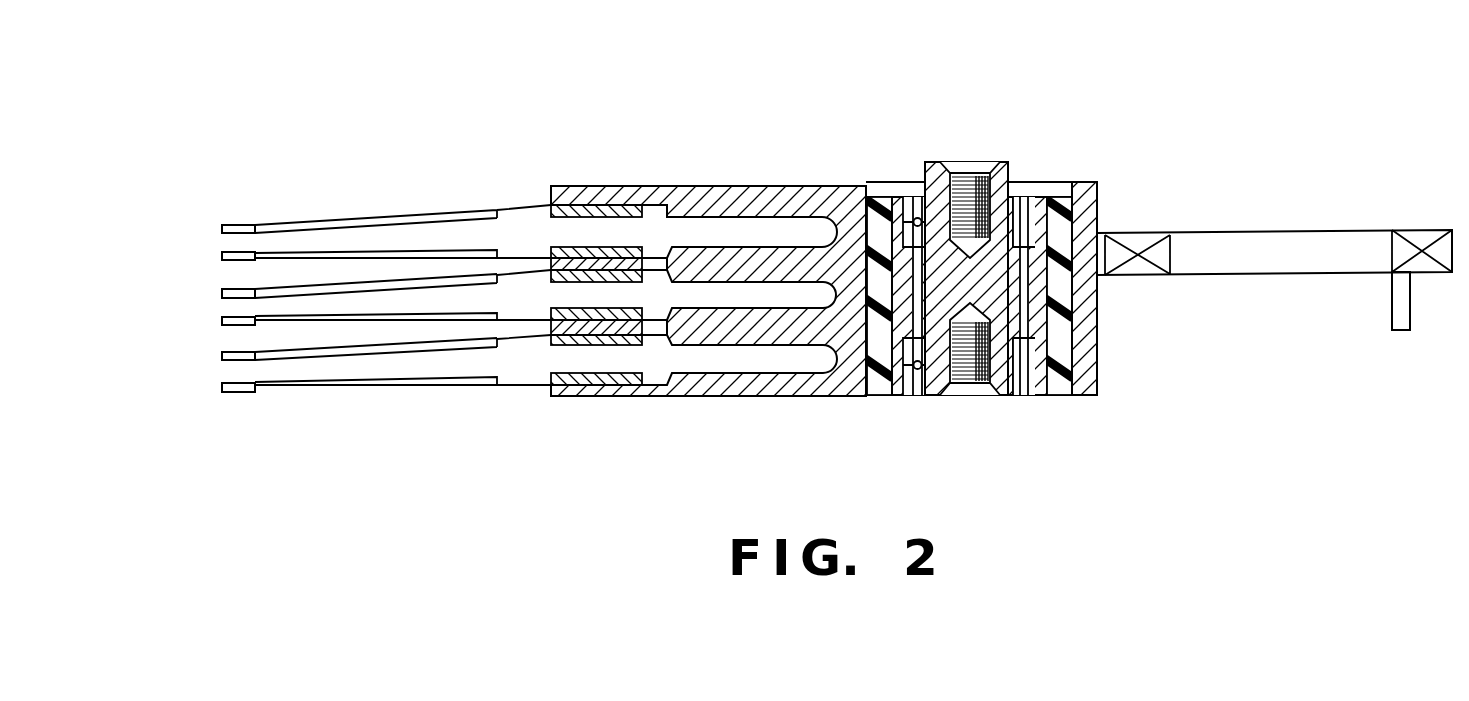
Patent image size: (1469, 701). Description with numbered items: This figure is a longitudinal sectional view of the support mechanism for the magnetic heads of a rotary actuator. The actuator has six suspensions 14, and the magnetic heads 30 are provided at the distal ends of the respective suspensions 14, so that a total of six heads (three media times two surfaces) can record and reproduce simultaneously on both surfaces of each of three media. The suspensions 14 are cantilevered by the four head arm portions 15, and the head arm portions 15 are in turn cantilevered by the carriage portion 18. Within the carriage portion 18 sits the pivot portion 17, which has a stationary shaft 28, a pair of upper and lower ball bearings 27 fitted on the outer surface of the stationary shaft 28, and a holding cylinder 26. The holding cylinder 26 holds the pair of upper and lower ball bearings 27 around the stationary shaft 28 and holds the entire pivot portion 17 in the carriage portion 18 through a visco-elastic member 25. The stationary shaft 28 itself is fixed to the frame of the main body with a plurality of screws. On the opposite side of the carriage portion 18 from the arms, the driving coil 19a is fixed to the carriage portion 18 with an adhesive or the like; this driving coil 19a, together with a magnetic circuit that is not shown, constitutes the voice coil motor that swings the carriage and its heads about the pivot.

The suspension 14 is at (323, 227).
The magnetic heads 30 is at (202, 220).
The head arm portions 15 is at (671, 186).
The carriage portion 18 is at (839, 186).
The pivot portion 17 is at (986, 105).
The stationary shaft 28 is at (962, 172).
The ball bearings 27 is at (1024, 195).
The visco-elastic member 25 is at (1058, 198).
The holding cylinder 26 is at (1040, 397).
The driving coil 19a is at (1414, 232).